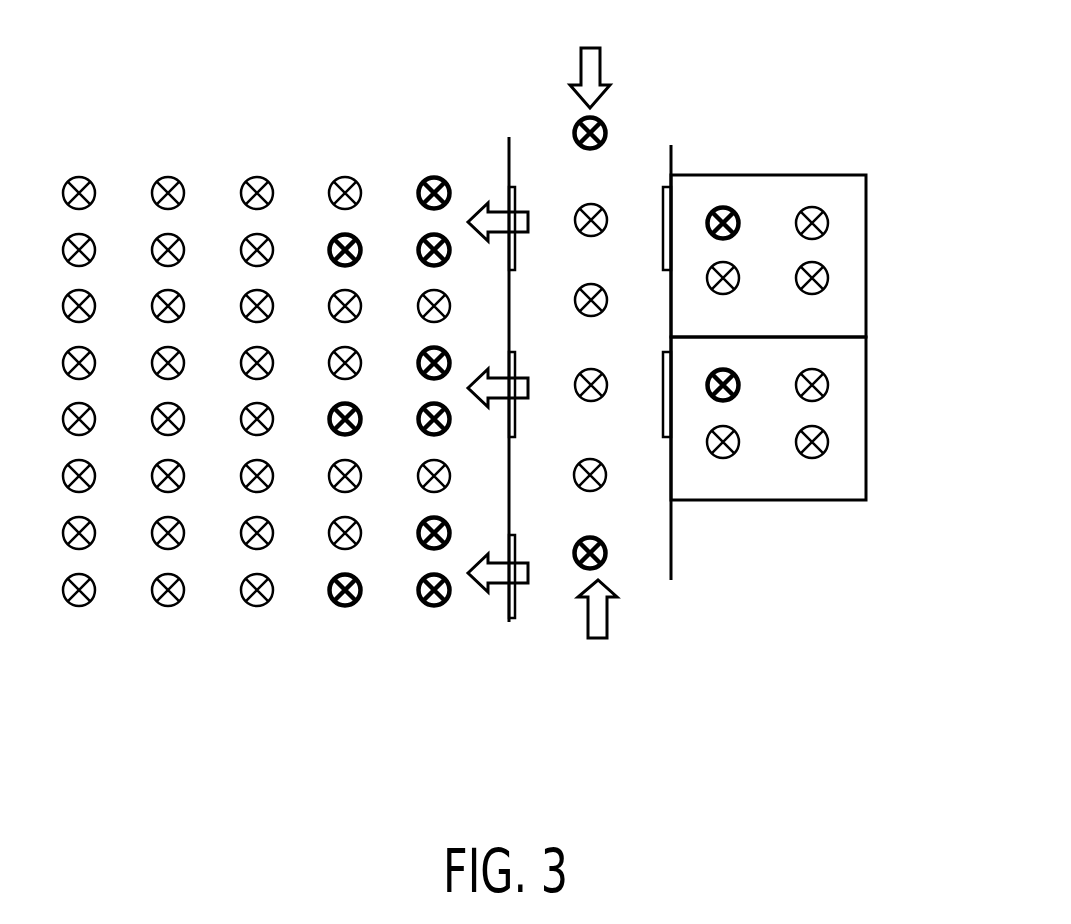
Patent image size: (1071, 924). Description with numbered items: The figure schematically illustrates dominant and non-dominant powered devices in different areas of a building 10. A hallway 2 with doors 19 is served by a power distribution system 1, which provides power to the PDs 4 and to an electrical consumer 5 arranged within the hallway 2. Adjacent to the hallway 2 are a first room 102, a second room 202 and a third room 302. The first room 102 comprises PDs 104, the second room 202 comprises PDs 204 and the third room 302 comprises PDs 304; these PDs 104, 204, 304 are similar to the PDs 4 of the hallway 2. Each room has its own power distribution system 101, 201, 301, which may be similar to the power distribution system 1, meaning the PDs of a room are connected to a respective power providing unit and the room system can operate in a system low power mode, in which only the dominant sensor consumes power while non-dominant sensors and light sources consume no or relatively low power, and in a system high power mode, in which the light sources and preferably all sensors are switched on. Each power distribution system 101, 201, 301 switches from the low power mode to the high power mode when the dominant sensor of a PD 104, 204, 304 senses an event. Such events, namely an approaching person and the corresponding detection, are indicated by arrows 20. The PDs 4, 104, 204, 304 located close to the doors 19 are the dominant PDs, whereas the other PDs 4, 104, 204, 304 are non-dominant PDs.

The power distribution system 1 is at (633, 103).
The hallway 2 is at (643, 518).
The PDs 4 is at (607, 133).
The electrical consumer 5 is at (603, 288).
The building 10 is at (592, 692).
The doors 19 is at (516, 190).
The arrows 20 is at (487, 203).
The power distribution system 101 is at (268, 670).
The first room 102 is at (208, 628).
The PDs 104 is at (67, 172).
The power distribution system 201 is at (832, 208).
The second room 202 is at (828, 252).
The PDs 204 is at (832, 283).
The power distribution system 301 is at (835, 378).
The third room 302 is at (835, 448).
The PDs 304 is at (816, 460).